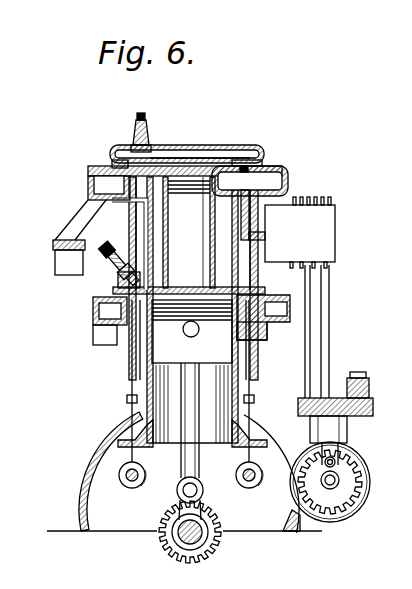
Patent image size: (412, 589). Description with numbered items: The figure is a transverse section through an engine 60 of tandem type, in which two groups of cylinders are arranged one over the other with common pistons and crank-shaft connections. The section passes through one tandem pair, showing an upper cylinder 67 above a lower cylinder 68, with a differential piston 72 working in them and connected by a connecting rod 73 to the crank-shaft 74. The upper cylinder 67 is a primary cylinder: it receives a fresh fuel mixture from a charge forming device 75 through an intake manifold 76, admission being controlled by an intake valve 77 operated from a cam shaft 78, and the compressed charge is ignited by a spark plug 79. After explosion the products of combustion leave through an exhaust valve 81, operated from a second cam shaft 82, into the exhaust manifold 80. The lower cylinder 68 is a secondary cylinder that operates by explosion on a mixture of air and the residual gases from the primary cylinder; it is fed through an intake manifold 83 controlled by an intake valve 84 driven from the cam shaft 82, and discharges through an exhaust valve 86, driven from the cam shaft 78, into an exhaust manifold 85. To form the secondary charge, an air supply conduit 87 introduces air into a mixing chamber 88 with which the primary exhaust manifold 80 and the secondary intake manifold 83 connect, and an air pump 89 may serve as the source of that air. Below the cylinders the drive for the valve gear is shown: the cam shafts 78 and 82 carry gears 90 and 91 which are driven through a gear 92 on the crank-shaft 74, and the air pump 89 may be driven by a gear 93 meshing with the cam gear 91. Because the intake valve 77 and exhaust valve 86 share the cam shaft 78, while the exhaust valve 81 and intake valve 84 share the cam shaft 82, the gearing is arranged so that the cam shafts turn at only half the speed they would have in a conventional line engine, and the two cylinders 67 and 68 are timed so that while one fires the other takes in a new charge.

The engine 60 is at (238, 149).
The upper cylinder 67 is at (196, 162).
The lower cylinder 68 is at (192, 315).
The differential piston 72 is at (189, 232).
The connecting rod 73 is at (180, 402).
The crank-shaft 74 is at (177, 538).
The charge forming device 75 is at (108, 289).
The intake manifold 76 is at (96, 168).
The intake valve 77 is at (118, 150).
The cam shaft 78 is at (122, 480).
The spark plug 79 is at (147, 138).
The exhaust manifold 80 is at (286, 173).
The exhaust valve 81 is at (262, 158).
The cam shaft 82 is at (272, 533).
The intake manifold 83 is at (277, 323).
The intake valve 84 is at (268, 296).
The exhaust manifold 85 is at (98, 332).
The exhaust valve 86 is at (93, 305).
The air supply conduit 87 is at (317, 314).
The mixing chamber 88 is at (317, 228).
The air pump 89 is at (352, 430).
The gear 90 is at (127, 508).
The gear 91 is at (246, 552).
The gear 92 is at (212, 550).
The gear 93 is at (347, 484).